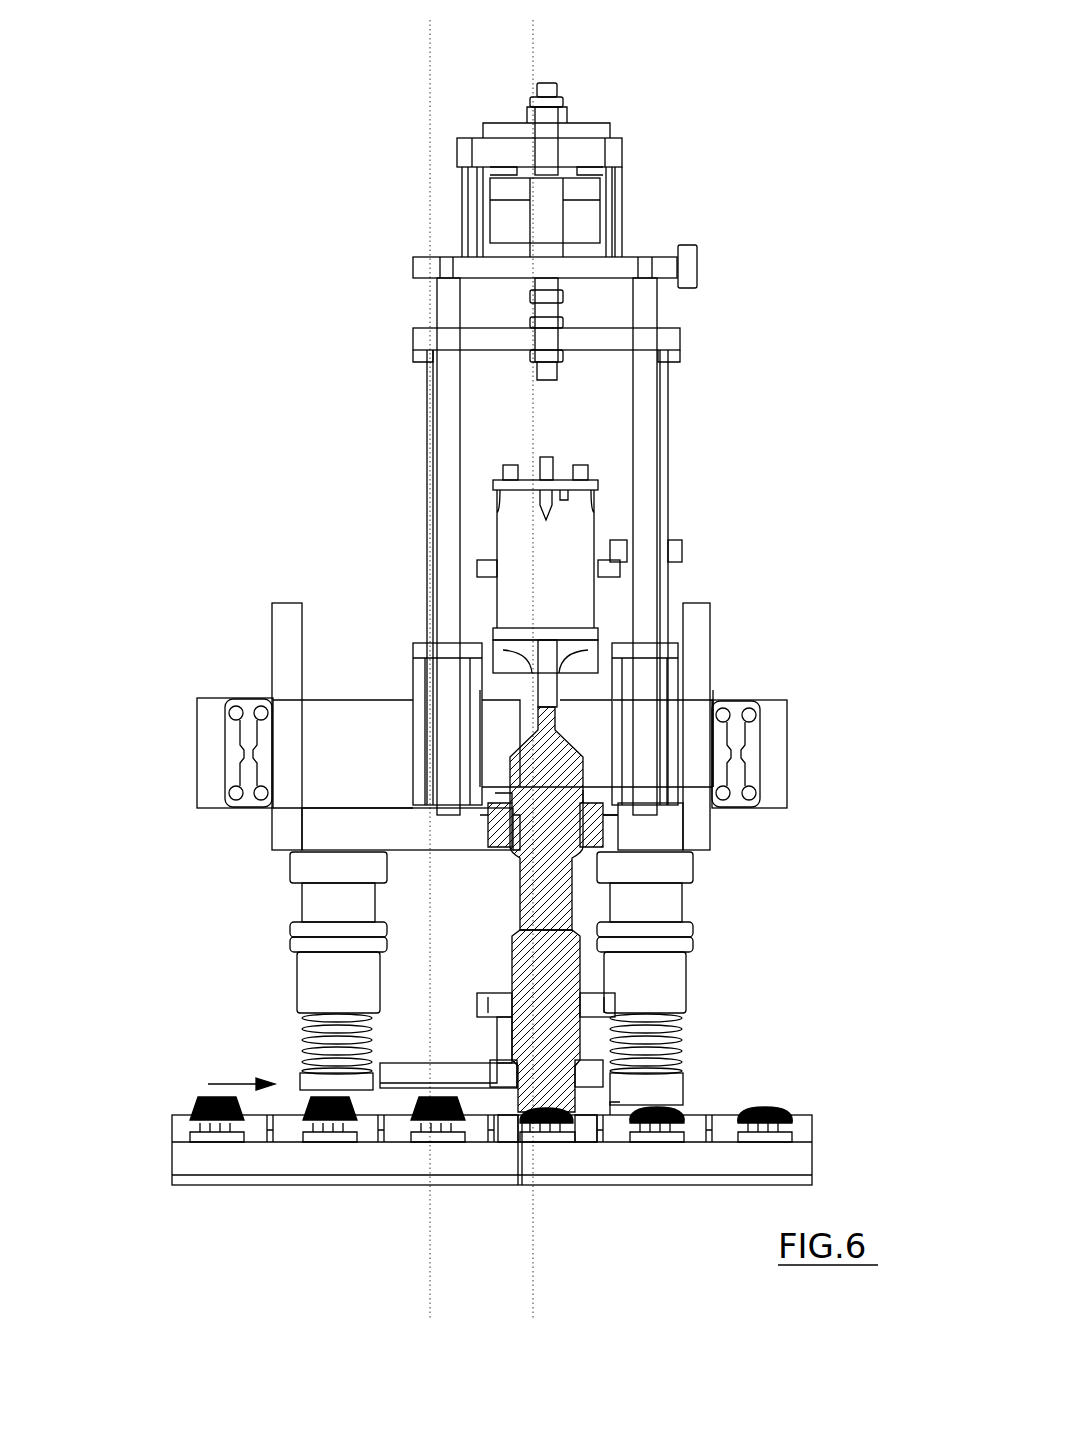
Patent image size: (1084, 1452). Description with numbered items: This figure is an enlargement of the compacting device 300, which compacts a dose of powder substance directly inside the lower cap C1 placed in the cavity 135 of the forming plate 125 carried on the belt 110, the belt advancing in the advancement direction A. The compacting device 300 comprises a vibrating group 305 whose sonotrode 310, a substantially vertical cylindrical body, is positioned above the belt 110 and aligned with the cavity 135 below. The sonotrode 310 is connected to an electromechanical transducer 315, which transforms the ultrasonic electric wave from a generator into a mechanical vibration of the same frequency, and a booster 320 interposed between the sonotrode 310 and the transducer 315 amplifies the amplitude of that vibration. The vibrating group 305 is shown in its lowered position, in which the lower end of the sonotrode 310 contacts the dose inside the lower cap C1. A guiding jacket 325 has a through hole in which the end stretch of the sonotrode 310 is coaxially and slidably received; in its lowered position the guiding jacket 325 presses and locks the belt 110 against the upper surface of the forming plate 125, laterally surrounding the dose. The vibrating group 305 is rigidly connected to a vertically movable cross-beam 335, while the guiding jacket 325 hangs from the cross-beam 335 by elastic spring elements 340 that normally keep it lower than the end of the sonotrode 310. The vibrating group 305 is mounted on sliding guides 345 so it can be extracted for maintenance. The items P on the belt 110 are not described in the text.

The compacting device 300 is at (398, 93).
The vibrating group 305 is at (598, 718).
The sonotrode 310 is at (605, 922).
The electromechanical transducer 315 is at (565, 556).
The booster 320 is at (530, 687).
The guiding jacket 325 is at (585, 1106).
The cross-beam 335 is at (300, 826).
The elastic spring elements 340 is at (305, 1050).
The sliding guides 345 is at (235, 735).
The belt 110 is at (175, 1114).
The forming plate 125 is at (503, 1136).
The cavity 135 is at (576, 1150).
The lower cap C1 is at (545, 1132).
The component package P is at (790, 1114).
The advancement direction A is at (241, 1073).